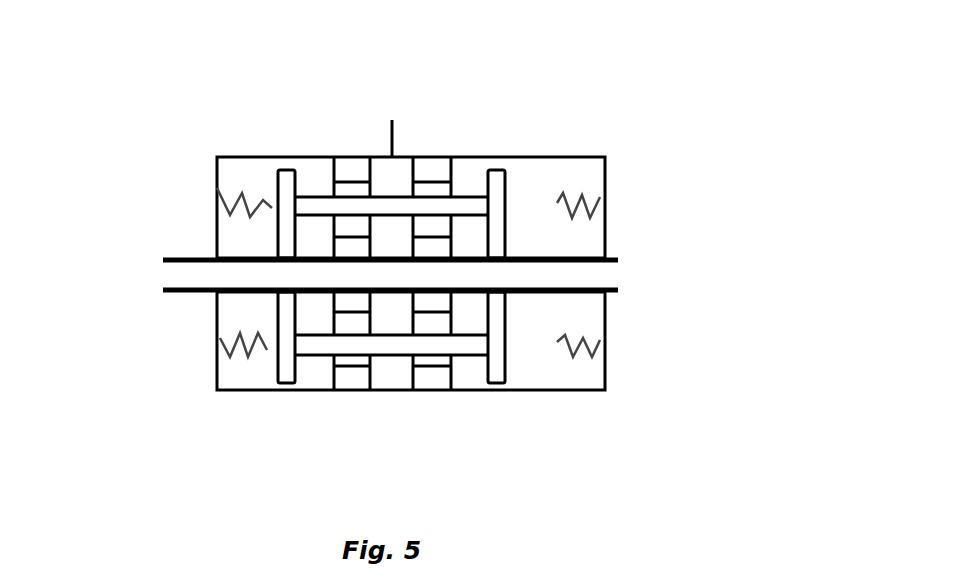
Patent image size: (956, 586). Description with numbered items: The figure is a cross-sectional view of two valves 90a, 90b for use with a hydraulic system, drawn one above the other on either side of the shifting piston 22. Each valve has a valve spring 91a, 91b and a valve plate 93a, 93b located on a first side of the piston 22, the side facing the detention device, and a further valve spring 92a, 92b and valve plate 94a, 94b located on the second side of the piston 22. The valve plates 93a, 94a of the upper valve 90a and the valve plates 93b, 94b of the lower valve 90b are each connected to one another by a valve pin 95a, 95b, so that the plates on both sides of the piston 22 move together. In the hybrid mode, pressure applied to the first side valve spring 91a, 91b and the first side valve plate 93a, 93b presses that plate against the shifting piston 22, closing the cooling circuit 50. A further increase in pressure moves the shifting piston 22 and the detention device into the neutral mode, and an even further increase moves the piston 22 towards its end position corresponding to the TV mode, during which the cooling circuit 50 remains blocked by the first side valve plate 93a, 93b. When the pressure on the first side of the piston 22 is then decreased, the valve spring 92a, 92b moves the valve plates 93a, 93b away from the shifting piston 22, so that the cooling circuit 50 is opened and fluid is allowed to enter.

The shifting piston 22 is at (177, 273).
The cooling circuit 50 is at (391, 132).
The valve 90a is at (700, 183).
The valve 90b is at (692, 393).
The valve spring 91a is at (237, 200).
The valve spring 91b is at (227, 350).
The valve spring 92a is at (592, 207).
The valve spring 92b is at (597, 340).
The valve plate 93a is at (285, 170).
The valve plate 93b is at (290, 363).
The valve plate 94a is at (500, 171).
The valve plate 94b is at (492, 370).
The valve pin 95a is at (345, 207).
The valve pin 95b is at (385, 345).